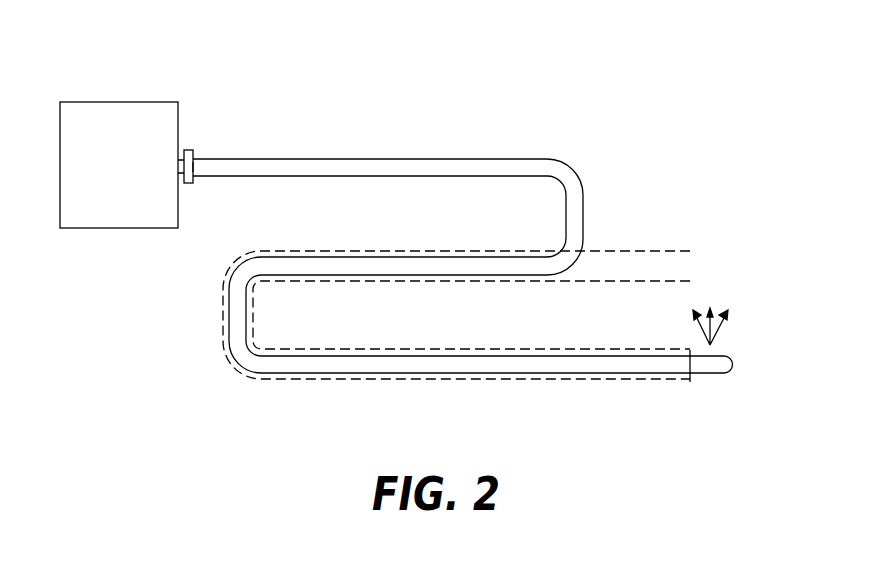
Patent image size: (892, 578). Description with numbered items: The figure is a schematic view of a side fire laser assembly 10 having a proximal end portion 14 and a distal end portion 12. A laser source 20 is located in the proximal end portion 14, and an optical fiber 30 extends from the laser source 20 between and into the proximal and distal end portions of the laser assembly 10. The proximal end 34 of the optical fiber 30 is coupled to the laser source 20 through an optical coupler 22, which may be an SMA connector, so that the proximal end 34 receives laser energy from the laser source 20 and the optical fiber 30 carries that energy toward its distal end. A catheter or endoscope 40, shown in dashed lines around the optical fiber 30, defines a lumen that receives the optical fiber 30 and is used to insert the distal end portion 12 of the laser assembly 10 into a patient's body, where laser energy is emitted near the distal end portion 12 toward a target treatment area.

The side fire laser assembly 10 is at (531, 71).
The distal end portion 12 is at (706, 377).
The proximal end portion 14 is at (183, 58).
The laser source 20 is at (115, 102).
The optical coupler 22 is at (188, 149).
The optical fiber 30 is at (414, 159).
The proximal end 34 is at (202, 177).
The endoscope 40 is at (482, 350).